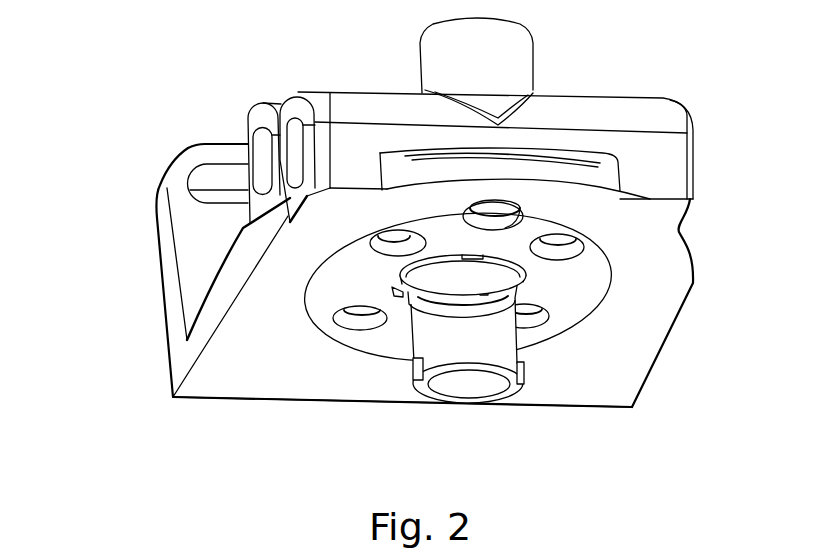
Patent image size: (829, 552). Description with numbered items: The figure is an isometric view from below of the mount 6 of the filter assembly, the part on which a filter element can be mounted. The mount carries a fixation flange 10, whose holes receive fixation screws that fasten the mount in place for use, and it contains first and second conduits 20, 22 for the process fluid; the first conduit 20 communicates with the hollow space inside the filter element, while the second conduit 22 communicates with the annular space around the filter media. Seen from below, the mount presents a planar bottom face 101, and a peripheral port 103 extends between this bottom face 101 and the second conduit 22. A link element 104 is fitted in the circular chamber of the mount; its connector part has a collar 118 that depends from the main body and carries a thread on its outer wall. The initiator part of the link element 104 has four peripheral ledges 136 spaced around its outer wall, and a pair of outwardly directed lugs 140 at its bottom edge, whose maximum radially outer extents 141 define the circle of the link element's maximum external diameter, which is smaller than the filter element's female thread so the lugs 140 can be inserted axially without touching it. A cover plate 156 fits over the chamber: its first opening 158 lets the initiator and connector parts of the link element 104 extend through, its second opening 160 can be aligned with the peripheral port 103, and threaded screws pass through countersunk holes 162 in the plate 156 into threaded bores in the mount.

The fixture assembly 6 is at (128, 223).
The fixation flange 10 is at (180, 160).
The first conduit 20 is at (268, 103).
The second conduit 22 is at (667, 113).
The planar bottom face 101 is at (592, 323).
The peripheral port 103 is at (518, 236).
The link element 104 is at (519, 340).
The collar 118 is at (530, 303).
The peripheral ledges 136 is at (503, 337).
The outwardly directed lugs 140 is at (412, 380).
The maximum radially outer extents 141 is at (407, 370).
The cover plate 156 is at (327, 282).
The first opening 158 is at (470, 255).
The second opening 160 is at (497, 208).
The countersunk holes 162 is at (353, 323).